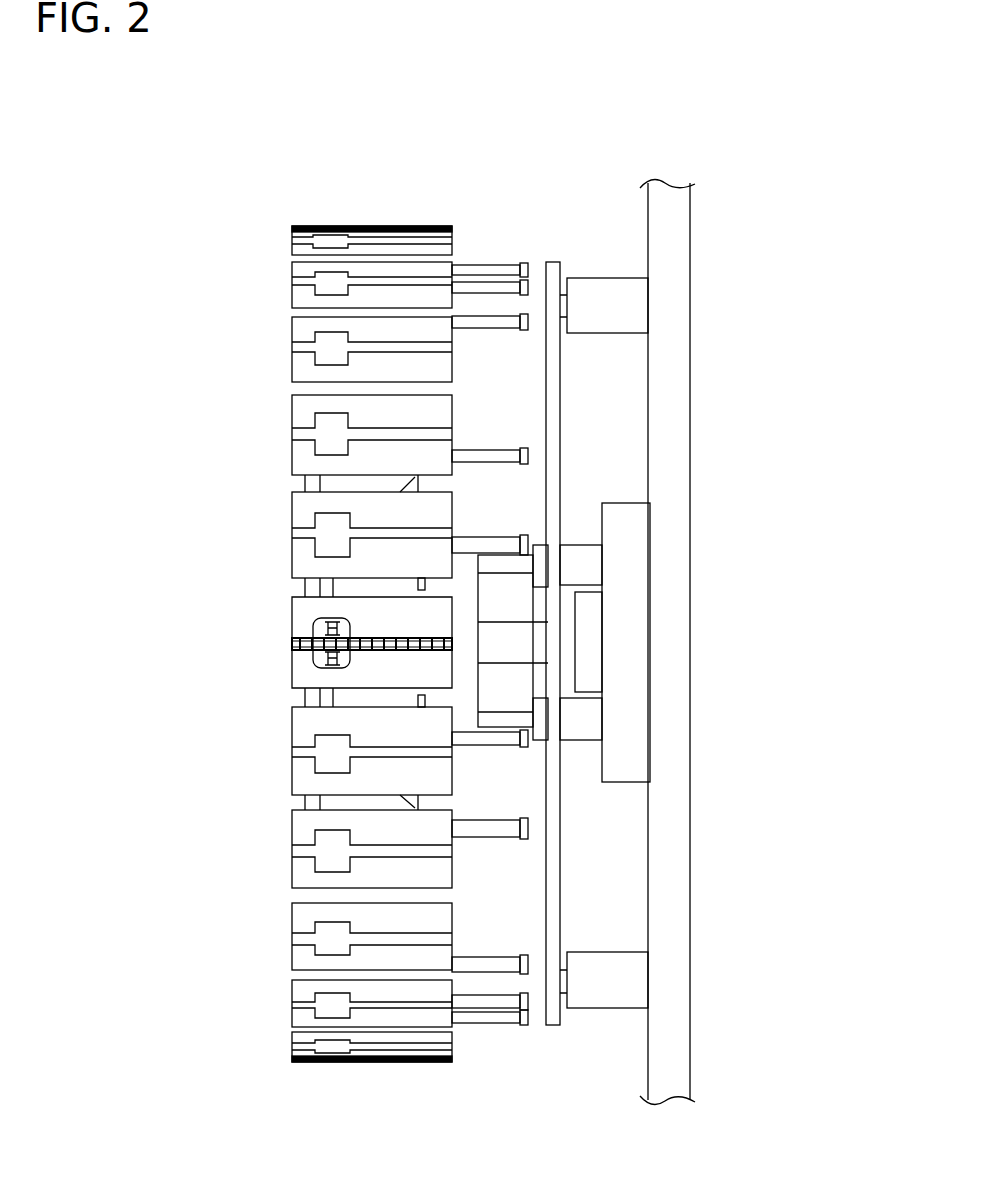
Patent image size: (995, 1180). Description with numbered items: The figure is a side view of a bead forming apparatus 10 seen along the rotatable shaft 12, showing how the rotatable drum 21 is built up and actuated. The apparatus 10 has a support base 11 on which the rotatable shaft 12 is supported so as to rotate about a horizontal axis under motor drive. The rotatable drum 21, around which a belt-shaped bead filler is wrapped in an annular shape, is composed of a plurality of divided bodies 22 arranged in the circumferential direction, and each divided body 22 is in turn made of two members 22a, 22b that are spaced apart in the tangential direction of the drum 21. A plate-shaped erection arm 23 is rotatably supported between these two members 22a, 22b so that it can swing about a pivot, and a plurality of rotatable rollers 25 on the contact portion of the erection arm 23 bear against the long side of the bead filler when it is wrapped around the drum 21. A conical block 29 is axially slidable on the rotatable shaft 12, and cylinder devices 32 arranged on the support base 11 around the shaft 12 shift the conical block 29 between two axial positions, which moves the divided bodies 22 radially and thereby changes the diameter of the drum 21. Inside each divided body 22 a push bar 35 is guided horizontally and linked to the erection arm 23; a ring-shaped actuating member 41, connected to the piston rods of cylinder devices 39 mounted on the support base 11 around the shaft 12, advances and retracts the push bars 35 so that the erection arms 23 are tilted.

The bead forming apparatus 10 is at (265, 238).
The support base 11 is at (672, 222).
The rotatable shaft 12 is at (510, 640).
The rotatable drum 21 is at (400, 218).
The divided body 22 is at (278, 360).
The member 22a is at (302, 622).
The member 22b is at (300, 667).
The erection arm 23 is at (360, 633).
The rotatable roller 25 is at (383, 642).
The conical block 29 is at (400, 707).
The cylinder device 32 is at (585, 560).
The push bar 35 is at (494, 322).
The cylinder device 39 is at (612, 285).
The ring-shaped actuating member 41 is at (552, 272).